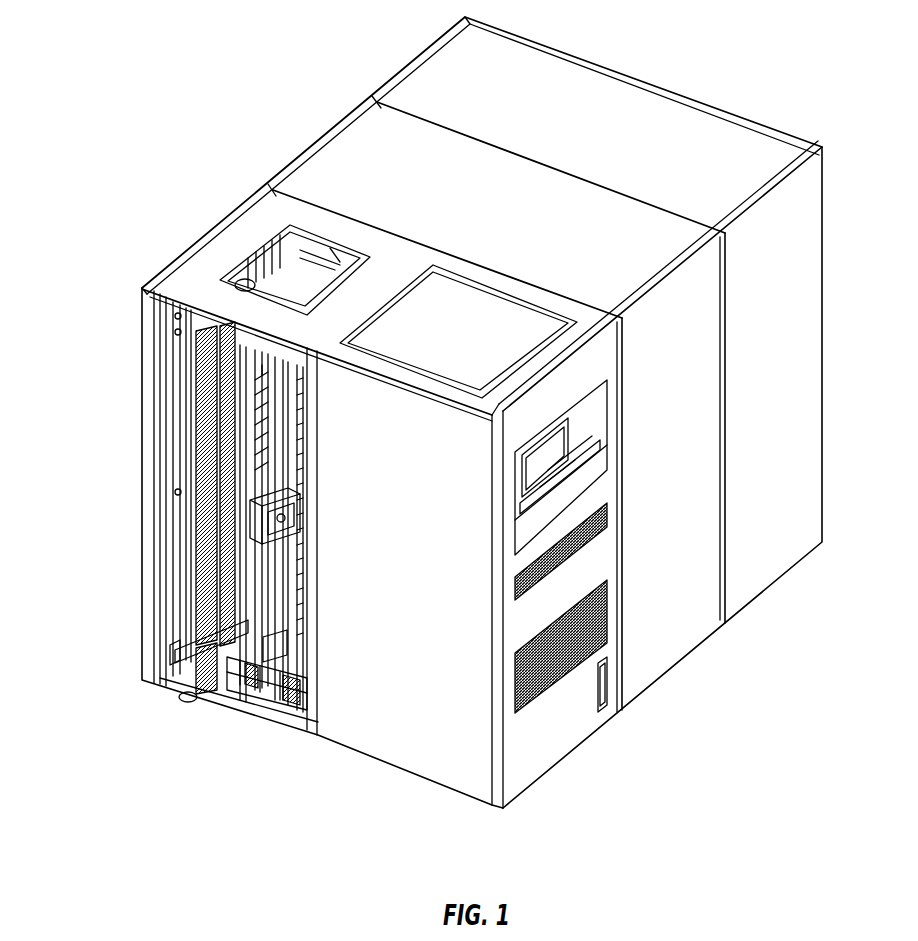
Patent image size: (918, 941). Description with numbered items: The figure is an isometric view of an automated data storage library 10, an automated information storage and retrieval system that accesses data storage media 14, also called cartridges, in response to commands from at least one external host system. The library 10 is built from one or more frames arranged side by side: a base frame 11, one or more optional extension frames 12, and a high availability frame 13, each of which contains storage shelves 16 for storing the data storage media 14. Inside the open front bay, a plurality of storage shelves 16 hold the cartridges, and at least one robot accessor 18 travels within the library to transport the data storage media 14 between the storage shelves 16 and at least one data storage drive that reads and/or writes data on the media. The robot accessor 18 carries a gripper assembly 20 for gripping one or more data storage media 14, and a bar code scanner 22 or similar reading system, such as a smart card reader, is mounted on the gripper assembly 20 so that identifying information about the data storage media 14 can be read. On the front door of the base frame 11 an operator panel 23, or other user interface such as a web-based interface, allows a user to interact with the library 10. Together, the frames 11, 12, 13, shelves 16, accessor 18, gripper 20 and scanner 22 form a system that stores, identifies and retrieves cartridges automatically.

The automated data storage library 10 is at (255, 125).
The base frame 11 is at (597, 552).
The extension frame 12 is at (663, 660).
The high availability frame 13 is at (601, 110).
The data storage media 14 is at (197, 337).
The storage shelves 16 is at (140, 475).
The robot accessor 18 is at (232, 666).
The gripper assembly 20 is at (291, 534).
The bar code scanner 22 is at (282, 500).
The operator panel 23 is at (605, 487).